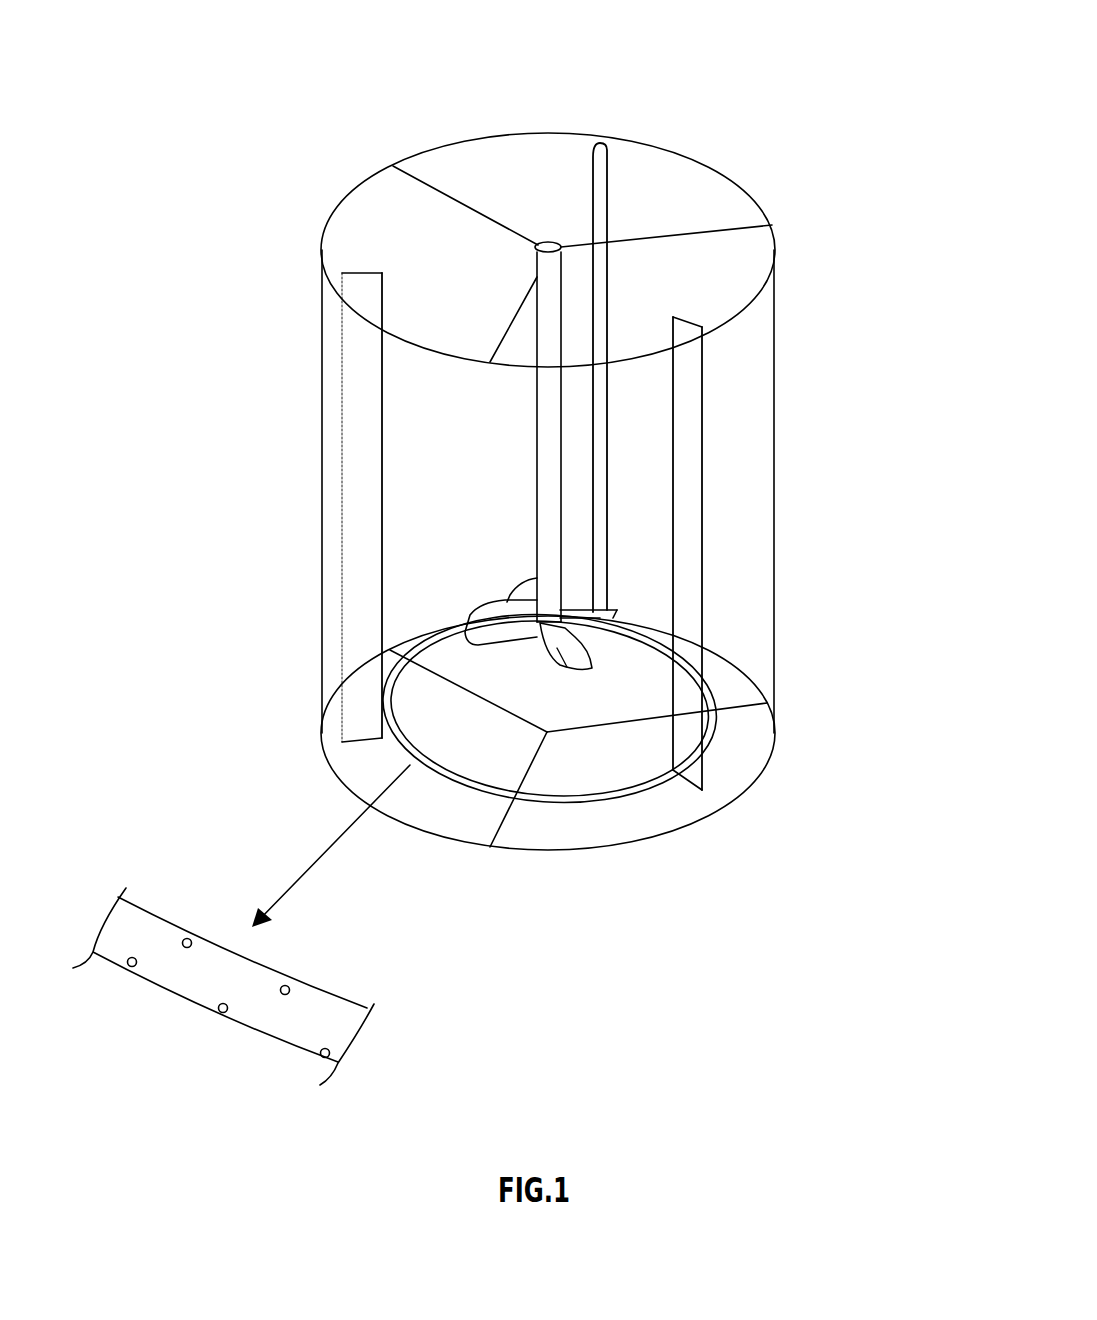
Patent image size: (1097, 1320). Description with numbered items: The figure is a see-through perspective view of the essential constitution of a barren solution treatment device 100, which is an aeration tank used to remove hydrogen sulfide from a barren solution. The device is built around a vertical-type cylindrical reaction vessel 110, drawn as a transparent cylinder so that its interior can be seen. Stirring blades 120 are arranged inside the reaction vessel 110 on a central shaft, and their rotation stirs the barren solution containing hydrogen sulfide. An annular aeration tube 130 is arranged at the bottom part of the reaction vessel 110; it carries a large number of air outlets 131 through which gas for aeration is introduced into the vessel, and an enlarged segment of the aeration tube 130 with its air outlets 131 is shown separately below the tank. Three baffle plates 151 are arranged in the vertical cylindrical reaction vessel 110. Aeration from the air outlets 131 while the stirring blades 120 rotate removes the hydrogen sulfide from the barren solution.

The barren solution treatment device 100 is at (812, 196).
The vertical-type cylindrical reaction vessel 110 is at (774, 456).
The stirring blades 120 is at (560, 653).
The annular aeration tube 130 is at (458, 783).
The air outlets 131 is at (183, 938).
The baffle plates 151 is at (360, 288).